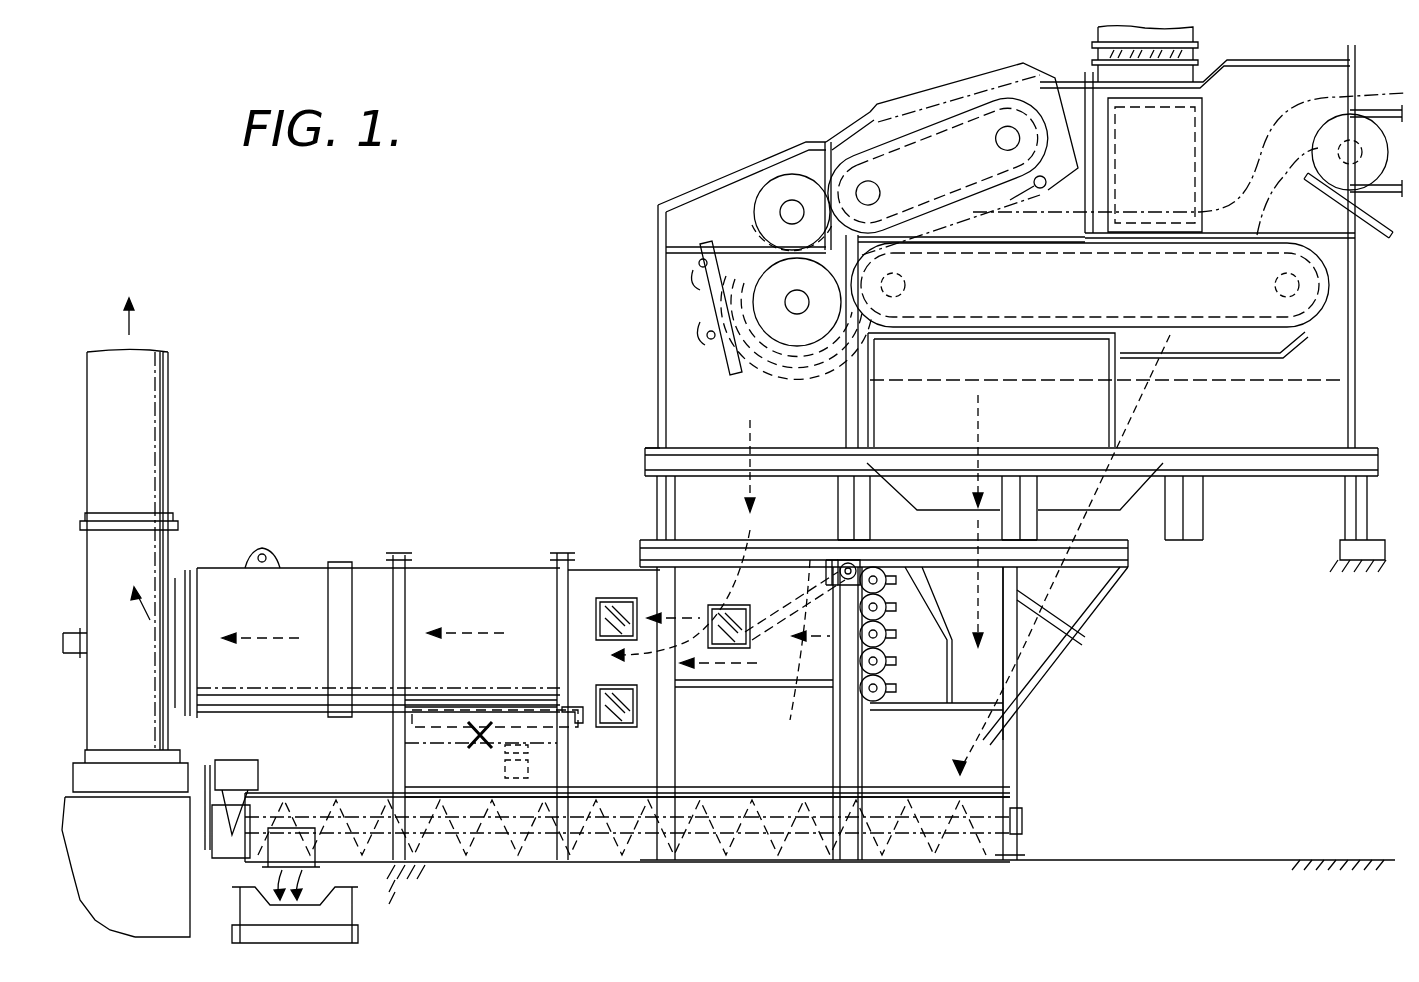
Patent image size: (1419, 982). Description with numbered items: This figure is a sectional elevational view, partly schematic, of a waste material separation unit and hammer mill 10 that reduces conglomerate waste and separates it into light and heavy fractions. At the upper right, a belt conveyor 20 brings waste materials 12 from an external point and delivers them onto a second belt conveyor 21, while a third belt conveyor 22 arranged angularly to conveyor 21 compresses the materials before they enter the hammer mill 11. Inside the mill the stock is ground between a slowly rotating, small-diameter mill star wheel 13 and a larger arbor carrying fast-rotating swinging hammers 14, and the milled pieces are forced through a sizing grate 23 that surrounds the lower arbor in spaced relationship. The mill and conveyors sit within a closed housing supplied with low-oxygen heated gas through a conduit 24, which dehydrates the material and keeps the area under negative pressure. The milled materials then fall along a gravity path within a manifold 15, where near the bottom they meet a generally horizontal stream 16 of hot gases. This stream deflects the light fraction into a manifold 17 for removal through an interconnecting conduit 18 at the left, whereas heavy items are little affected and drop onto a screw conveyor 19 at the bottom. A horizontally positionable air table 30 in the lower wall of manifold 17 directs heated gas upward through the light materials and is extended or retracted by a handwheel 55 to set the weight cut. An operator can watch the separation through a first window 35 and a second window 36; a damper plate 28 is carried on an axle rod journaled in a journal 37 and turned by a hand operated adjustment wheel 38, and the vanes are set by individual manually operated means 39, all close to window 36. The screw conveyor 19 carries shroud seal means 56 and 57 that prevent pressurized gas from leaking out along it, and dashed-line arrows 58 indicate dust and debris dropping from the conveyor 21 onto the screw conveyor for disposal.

The waste material separation unit and hammer mill 10 is at (538, 430).
The hammer mill 11 is at (842, 125).
The waste materials 12 is at (1246, 150).
The mill star wheel 13 is at (752, 196).
The swinging hammers 14 is at (766, 340).
The manifold 15 is at (656, 407).
The horizontally directed stream of hot gases 16 is at (722, 668).
The manifold 17 is at (496, 570).
The interconnecting conduit 18 is at (168, 440).
The screw conveyor 19 is at (716, 840).
The belt conveyor 20 is at (1380, 108).
The second belt conveyor 21 is at (1015, 255).
The third belt conveyor 22 is at (945, 125).
The sizing grate 23 is at (700, 322).
The conduit 24 is at (1188, 33).
The damper plate 28 is at (800, 600).
The air table 30 is at (450, 712).
The first window 35 is at (612, 600).
The second window 36 is at (748, 638).
The journal 37 is at (846, 560).
The hand operated adjustment wheel 38 is at (830, 570).
The manually operated means 39 is at (892, 686).
The handwheel 55 is at (490, 742).
The shroud seal means 56 is at (572, 797).
The shroud seal means 57 is at (948, 800).
The dashed-line arrows 58 is at (1040, 664).